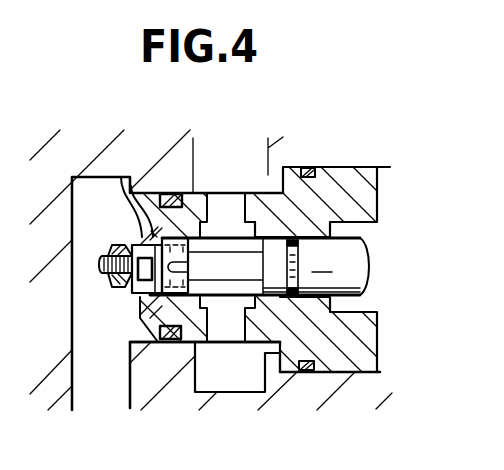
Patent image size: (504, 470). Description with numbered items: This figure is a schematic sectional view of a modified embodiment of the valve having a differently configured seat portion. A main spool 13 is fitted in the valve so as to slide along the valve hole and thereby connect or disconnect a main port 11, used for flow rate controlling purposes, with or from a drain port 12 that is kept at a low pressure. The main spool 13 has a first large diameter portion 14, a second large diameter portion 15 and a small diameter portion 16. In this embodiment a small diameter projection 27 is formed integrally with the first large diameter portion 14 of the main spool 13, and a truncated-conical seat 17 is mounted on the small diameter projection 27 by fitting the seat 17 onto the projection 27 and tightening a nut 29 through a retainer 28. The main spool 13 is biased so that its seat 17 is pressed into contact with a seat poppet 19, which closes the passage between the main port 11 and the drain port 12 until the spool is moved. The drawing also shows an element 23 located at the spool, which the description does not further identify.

The main port 11 is at (268, 148).
The drain port 12 is at (73, 385).
The main spool 13 is at (233, 232).
The first large diameter portion 14 is at (178, 172).
The second large diameter portion 15 is at (367, 293).
The small diameter portion 16 is at (237, 367).
The truncated-conical seat 17 is at (130, 178).
The seat poppet 19 is at (261, 376).
The nut 23 is at (190, 266).
The small diameter projection 27 is at (130, 300).
The retainer 28 is at (127, 256).
The nut 29 is at (105, 284).